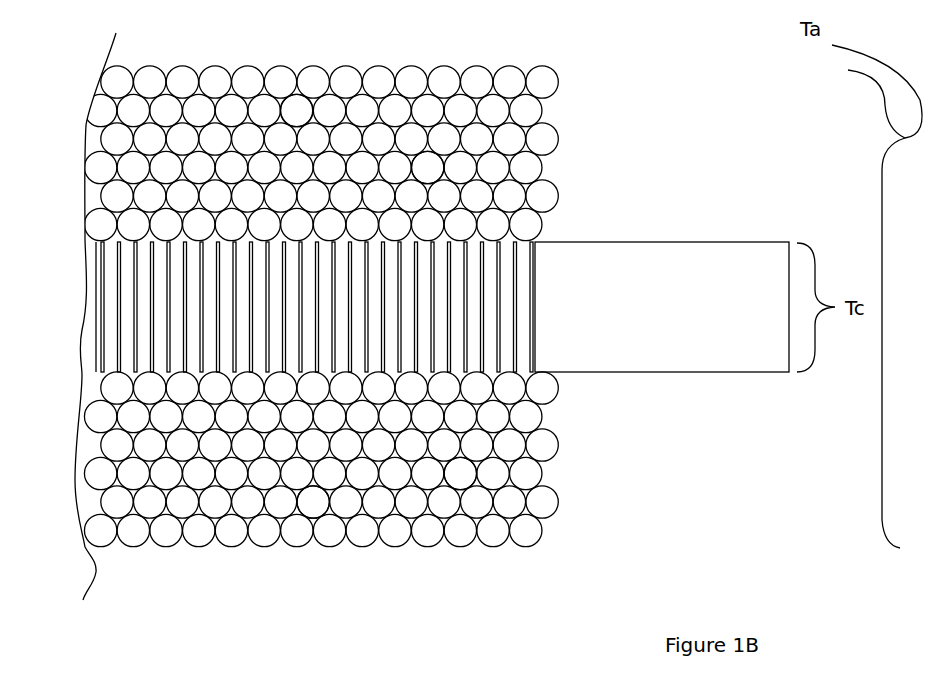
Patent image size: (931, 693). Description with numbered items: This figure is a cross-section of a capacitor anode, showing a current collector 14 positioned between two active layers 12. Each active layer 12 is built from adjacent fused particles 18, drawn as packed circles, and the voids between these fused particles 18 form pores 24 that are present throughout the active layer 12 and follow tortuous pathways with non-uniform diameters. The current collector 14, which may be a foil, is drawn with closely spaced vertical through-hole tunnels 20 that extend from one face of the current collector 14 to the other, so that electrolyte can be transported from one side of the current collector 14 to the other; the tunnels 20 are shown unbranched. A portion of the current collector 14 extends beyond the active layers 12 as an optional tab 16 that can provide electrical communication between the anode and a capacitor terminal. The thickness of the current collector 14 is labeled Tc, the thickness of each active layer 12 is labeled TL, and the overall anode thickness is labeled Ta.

The active layer 12 is at (362, 312).
The current collector 14 is at (637, 287).
The tab 16 is at (533, 376).
The fused particles 18 is at (228, 108).
The through-hole tunnels 20 is at (105, 278).
The pores 24 is at (298, 107).